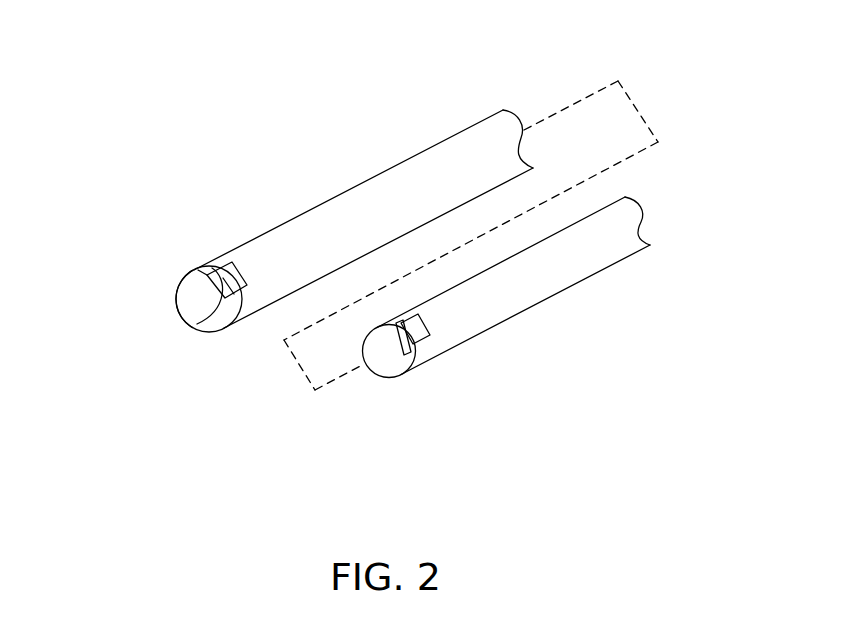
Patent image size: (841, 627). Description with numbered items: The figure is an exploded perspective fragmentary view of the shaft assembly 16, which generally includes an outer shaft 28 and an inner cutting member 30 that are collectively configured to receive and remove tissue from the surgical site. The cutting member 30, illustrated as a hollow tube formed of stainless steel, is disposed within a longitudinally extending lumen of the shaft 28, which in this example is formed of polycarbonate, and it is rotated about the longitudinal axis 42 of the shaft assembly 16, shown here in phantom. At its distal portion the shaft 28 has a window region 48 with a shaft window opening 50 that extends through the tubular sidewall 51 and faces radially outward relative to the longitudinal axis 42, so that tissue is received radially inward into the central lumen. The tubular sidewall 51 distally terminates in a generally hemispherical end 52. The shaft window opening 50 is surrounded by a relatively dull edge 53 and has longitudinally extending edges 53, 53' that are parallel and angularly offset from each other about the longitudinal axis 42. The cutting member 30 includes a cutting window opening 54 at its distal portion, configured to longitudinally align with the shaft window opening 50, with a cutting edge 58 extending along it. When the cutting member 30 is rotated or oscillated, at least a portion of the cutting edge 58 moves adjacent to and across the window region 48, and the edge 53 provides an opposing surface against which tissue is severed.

The shaft assembly 16 is at (220, 135).
The shaft 28 is at (450, 133).
The cutting member 30 is at (613, 272).
The longitudinal axis 42 is at (570, 104).
The window region 48 is at (220, 257).
The shaft window opening 50 is at (232, 262).
The tubular sidewall 51 is at (290, 232).
The hemispherical end 52 is at (185, 308).
The edge 53 is at (198, 333).
The edge 53' is at (146, 293).
The cutting window opening 54 is at (428, 327).
The cutting edge 58 is at (404, 356).